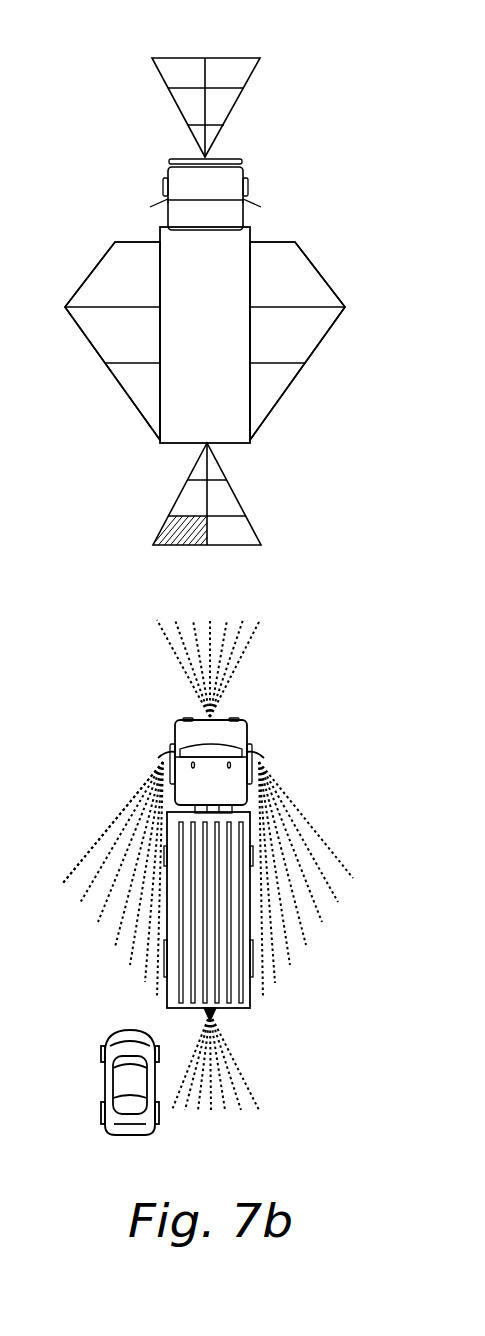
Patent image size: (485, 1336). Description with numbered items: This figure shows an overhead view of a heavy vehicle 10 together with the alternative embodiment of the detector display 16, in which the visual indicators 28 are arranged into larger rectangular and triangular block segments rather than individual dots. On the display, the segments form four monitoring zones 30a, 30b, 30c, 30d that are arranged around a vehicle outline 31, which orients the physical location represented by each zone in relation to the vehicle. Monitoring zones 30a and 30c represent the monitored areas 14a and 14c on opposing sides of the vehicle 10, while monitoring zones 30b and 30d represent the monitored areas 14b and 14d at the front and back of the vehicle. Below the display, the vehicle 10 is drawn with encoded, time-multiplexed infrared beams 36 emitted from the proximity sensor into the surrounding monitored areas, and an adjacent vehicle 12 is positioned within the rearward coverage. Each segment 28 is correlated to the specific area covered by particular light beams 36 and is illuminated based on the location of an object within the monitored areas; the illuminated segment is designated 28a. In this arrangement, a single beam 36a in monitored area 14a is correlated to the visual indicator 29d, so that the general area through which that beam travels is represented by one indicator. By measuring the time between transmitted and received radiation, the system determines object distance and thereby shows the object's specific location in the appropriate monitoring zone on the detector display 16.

The vehicle 10 is at (234, 738).
The adjacent vehicle 12 is at (123, 1040).
The monitored area 14a is at (114, 803).
The monitored area 14b is at (251, 665).
The monitored area 14c is at (314, 952).
The monitored area 14d is at (252, 1051).
The detector display 16 is at (259, 195).
The visual indicators 28 is at (310, 278).
The illuminated visual indicator segment 28a is at (163, 545).
The visual indicator 29d is at (108, 262).
The monitoring zone 30a is at (78, 352).
The monitoring zone 30b is at (219, 45).
The monitoring zone 30c is at (309, 386).
The monitoring zone 30d is at (256, 482).
The vehicle outline 31 is at (187, 432).
The beams 36 is at (165, 1079).
The beam 36a is at (78, 863).